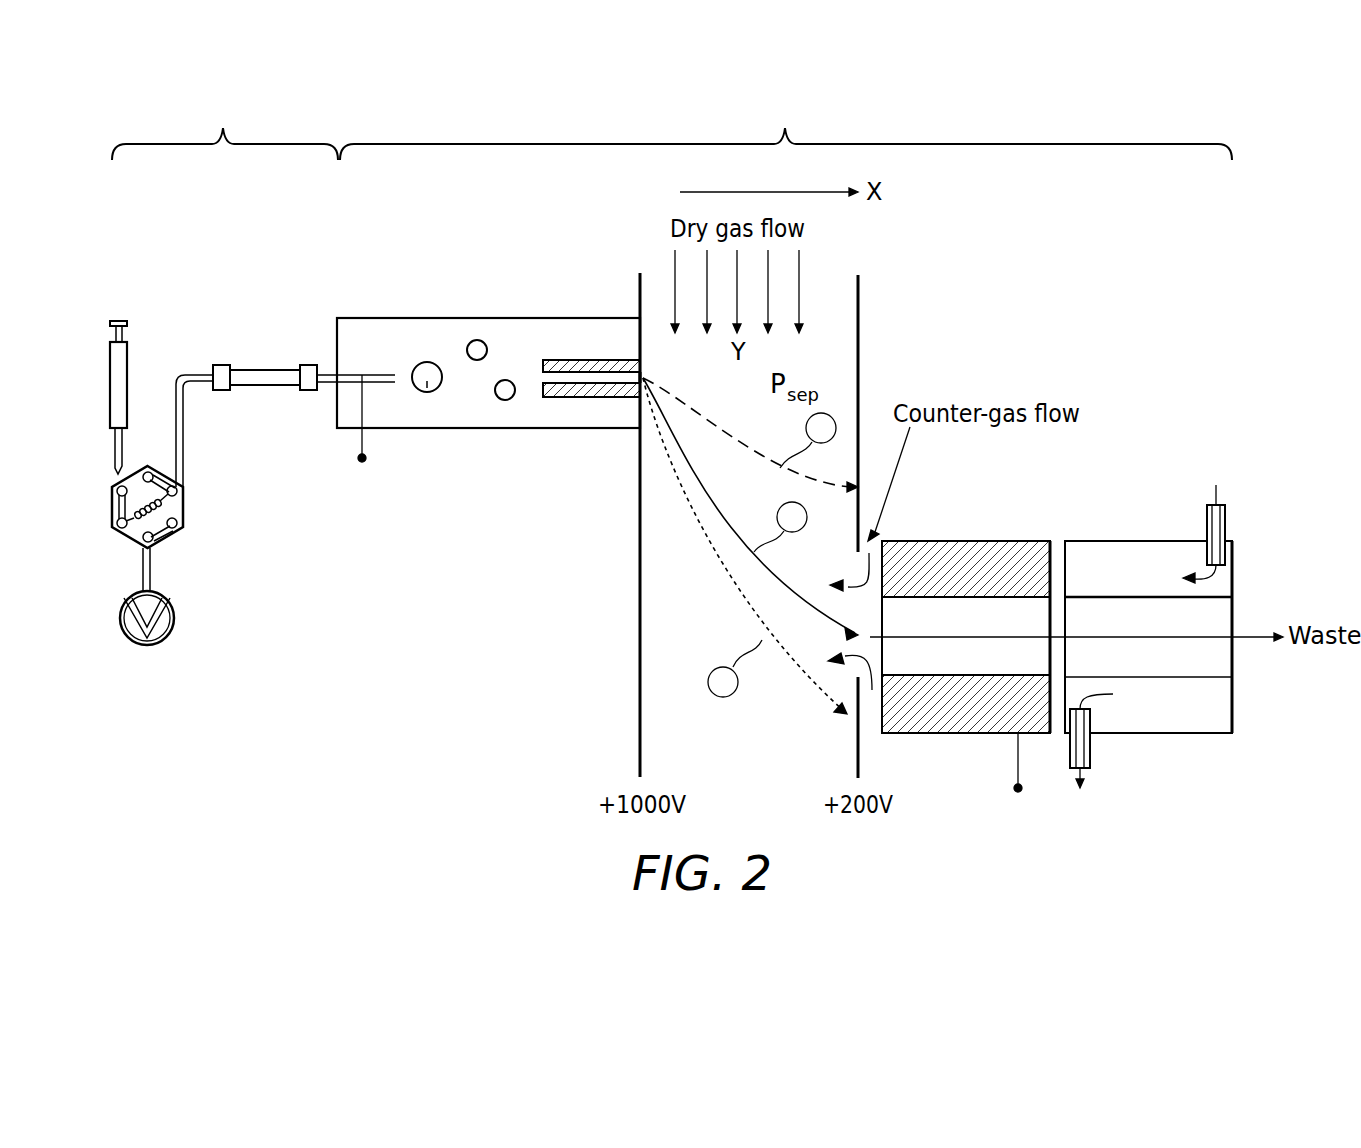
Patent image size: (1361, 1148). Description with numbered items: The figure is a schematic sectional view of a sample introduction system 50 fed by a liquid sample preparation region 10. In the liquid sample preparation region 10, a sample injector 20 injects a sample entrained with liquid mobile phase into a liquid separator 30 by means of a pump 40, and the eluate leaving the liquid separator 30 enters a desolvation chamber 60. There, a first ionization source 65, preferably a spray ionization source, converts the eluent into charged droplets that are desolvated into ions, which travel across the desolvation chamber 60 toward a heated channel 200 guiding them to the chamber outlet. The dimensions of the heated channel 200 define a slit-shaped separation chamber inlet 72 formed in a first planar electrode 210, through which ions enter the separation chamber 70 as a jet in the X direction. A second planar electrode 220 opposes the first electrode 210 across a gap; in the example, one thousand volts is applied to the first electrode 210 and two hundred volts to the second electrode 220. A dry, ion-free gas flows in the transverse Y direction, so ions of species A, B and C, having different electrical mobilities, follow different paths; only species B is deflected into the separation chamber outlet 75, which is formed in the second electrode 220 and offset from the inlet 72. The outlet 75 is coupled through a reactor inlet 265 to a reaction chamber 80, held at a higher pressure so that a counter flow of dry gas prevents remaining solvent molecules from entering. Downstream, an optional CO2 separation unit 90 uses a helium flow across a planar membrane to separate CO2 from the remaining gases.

The liquid sample preparation region 10 is at (225, 133).
The sample introduction system 50 is at (786, 133).
The sample injector 20 is at (110, 360).
The liquid separator 30 is at (267, 367).
The pump 40 is at (177, 617).
The desolvation chamber 60 is at (493, 430).
The first ionization source 65 is at (350, 383).
The separation chamber 70 is at (610, 648).
The separation chamber inlet 72 is at (637, 360).
The separation chamber outlet 75 is at (853, 665).
The reaction chamber 80 is at (967, 541).
The CO2 separation unit 90 is at (1150, 541).
The heated channel 200 is at (550, 360).
The first electrode 210 is at (640, 540).
The second electrode 220 is at (858, 302).
The reactor inlet 265 is at (882, 647).